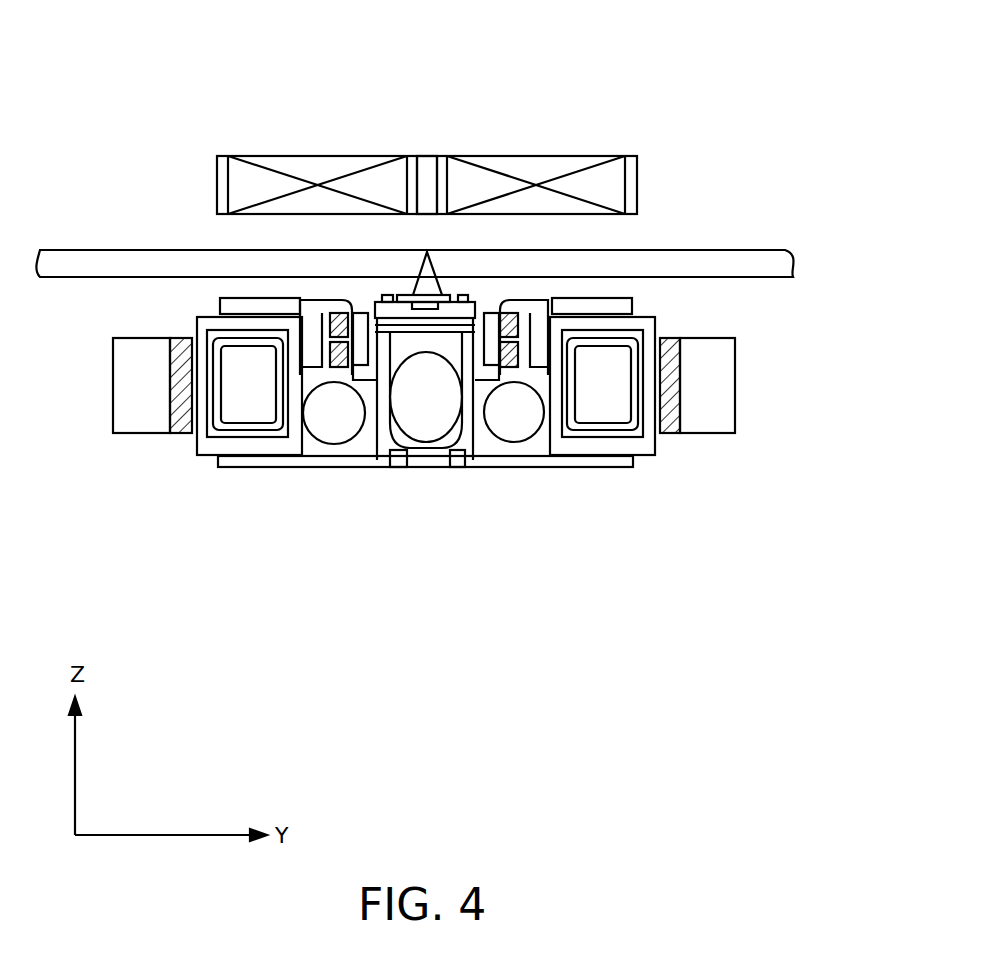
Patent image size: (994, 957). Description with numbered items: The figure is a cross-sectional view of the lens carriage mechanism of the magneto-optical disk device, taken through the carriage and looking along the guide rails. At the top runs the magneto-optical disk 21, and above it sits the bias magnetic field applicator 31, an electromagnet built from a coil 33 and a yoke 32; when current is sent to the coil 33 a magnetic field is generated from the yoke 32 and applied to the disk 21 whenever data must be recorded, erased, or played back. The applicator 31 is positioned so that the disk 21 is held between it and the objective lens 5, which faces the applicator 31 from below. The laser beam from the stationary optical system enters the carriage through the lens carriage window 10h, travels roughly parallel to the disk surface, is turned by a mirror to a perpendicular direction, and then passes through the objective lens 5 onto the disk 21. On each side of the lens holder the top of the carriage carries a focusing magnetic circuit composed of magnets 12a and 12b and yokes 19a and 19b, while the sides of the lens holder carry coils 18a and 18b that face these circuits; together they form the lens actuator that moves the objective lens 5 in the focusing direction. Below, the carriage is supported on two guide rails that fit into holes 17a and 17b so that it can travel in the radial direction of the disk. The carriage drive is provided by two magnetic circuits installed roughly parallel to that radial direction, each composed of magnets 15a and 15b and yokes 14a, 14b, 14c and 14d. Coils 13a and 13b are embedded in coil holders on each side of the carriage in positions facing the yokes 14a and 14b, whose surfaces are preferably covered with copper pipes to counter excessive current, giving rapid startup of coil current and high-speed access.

The objective lens 5 is at (432, 283).
The lens carriage window 10h is at (428, 420).
The magnet 12a is at (337, 305).
The magnet 12b is at (507, 310).
The coil 13a is at (213, 447).
The coil 13b is at (647, 453).
The yoke 14a is at (247, 410).
The yoke 14b is at (598, 412).
The yoke 14c is at (133, 417).
The yoke 14d is at (705, 393).
The magnet 15a is at (182, 435).
The magnet 15b is at (675, 430).
The hole 17a is at (327, 430).
The hole 17b is at (527, 420).
The coil 18a is at (356, 368).
The coil 18b is at (486, 355).
The yoke 19a is at (323, 325).
The yoke 19b is at (530, 320).
The magneto-optical disk 21 is at (745, 268).
The bias magnetic field applicator 31 is at (431, 128).
The yoke 32 is at (430, 165).
The coil 33 is at (263, 155).